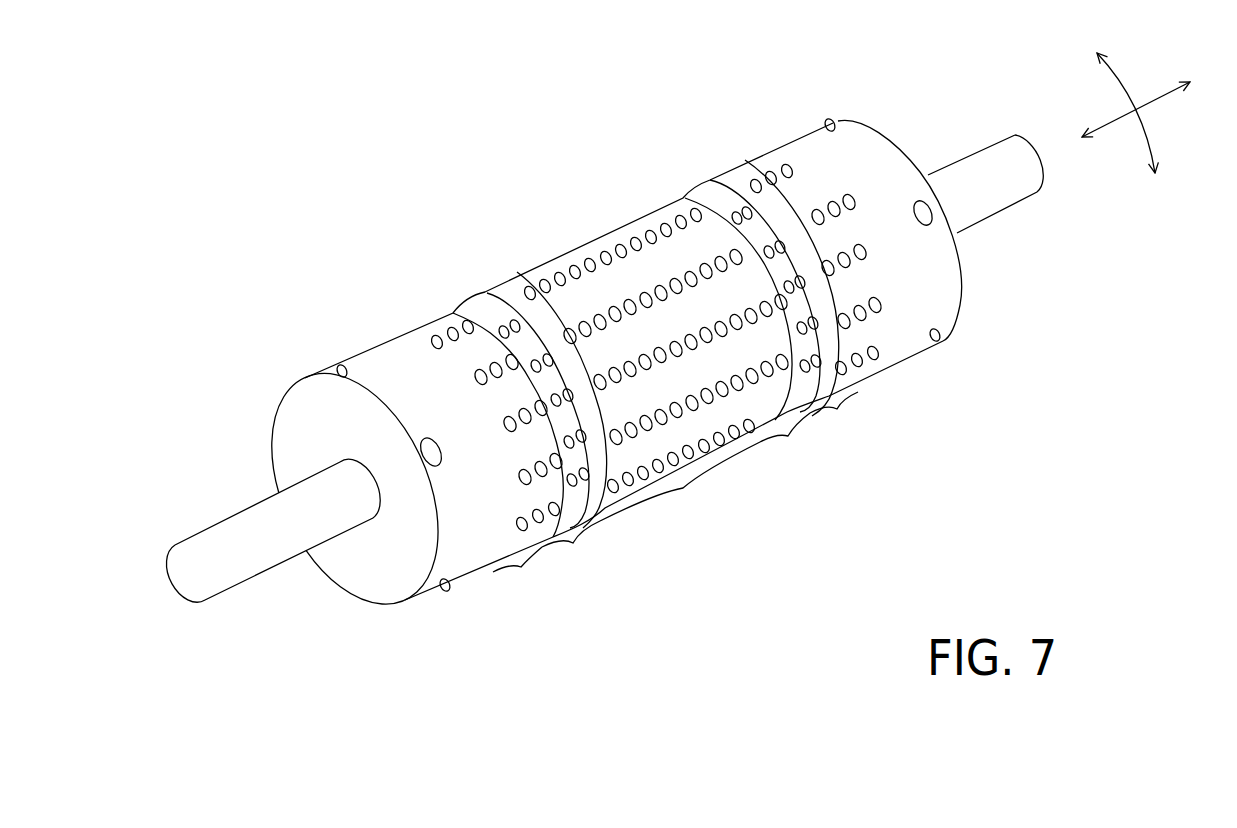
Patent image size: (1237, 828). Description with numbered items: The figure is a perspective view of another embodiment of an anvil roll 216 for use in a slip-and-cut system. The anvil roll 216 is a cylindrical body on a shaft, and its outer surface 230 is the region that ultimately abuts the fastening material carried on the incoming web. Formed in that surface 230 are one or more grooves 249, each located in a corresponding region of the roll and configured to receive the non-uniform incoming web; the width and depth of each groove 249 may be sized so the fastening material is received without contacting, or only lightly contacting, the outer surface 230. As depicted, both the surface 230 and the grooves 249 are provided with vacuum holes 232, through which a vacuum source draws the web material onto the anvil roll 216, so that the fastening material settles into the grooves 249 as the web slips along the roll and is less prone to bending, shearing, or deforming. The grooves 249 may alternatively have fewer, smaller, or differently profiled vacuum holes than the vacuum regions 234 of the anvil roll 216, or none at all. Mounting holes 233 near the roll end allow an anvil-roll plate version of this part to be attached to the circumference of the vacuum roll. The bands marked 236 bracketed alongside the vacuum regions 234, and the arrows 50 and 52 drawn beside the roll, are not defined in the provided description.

The anvil roll 216 is at (380, 205).
The surface 230 is at (368, 362).
The vacuum holes 232 is at (556, 279).
The mounting holes 233 is at (838, 121).
The vacuum regions 234 is at (680, 496).
The band zone 236 is at (681, 494).
The grooves 249 is at (436, 294).
The machine direction 50 is at (1163, 97).
The rotation direction 52 is at (1150, 137).